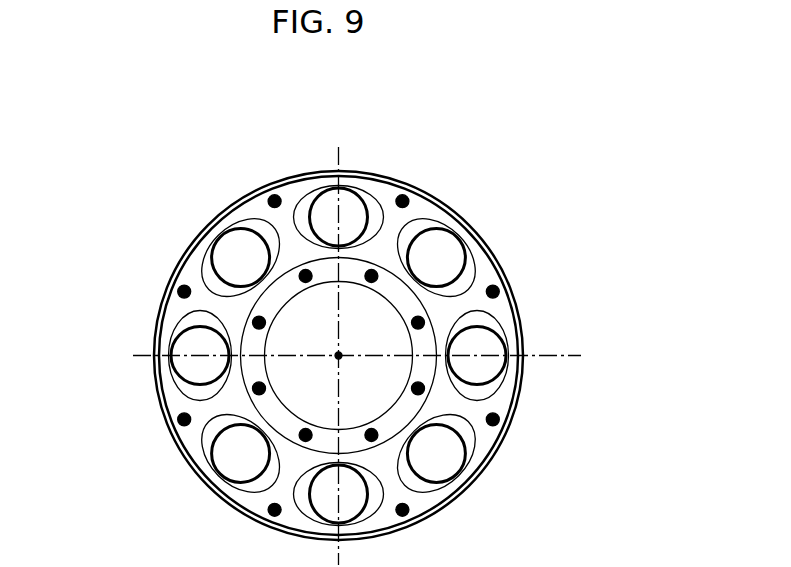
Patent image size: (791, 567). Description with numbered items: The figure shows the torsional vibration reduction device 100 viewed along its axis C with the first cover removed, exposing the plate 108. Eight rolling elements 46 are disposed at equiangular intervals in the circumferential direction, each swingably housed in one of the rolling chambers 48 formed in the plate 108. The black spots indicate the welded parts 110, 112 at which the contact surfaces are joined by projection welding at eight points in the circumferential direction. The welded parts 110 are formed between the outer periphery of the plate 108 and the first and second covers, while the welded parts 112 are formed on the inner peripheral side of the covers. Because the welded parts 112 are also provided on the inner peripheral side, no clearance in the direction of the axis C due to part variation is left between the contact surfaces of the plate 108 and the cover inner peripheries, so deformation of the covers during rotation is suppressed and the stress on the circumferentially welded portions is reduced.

The torsional vibration reduction device 100 is at (605, 243).
The axis C is at (338, 356).
The plate 108 is at (499, 266).
The rolling chambers 48 is at (290, 183).
The rolling elements 46 is at (356, 208).
The welded parts 110 is at (270, 190).
The welded parts 112 is at (309, 285).